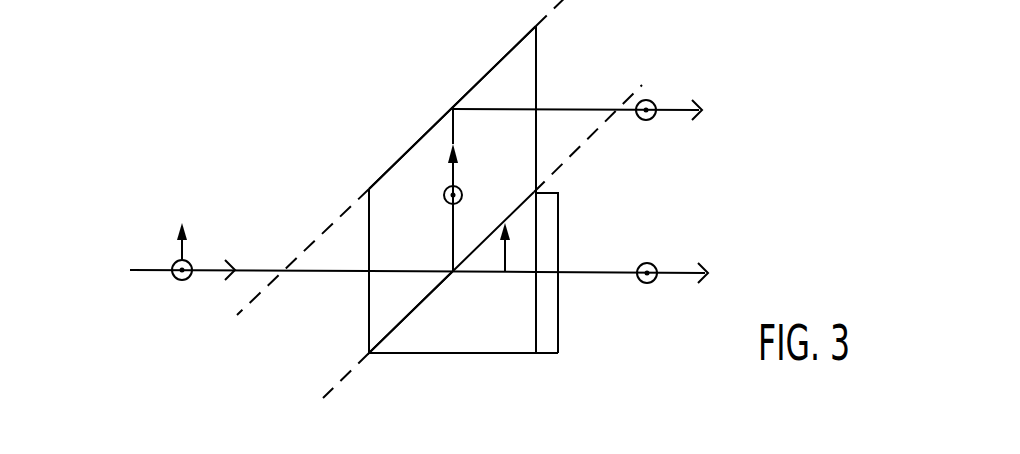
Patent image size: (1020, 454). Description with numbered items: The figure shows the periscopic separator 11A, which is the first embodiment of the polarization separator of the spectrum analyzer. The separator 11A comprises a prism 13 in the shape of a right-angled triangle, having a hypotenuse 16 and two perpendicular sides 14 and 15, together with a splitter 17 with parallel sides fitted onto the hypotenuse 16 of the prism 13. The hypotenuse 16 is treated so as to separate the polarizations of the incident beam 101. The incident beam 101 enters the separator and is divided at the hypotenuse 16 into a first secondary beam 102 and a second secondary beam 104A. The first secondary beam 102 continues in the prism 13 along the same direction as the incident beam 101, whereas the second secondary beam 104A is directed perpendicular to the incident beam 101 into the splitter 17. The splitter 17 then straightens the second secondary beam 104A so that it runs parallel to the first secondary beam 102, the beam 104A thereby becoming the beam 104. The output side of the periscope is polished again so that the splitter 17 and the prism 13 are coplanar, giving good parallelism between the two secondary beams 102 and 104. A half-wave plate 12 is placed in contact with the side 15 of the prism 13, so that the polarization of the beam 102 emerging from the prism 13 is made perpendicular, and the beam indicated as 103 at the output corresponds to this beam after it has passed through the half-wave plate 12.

The periscopic separator 11A is at (383, 121).
The λ/2 plate 12 is at (560, 207).
The prism 13 is at (452, 364).
The perpendicular side 14 is at (505, 357).
The perpendicular side 15 is at (536, 325).
The hypotenuse 16 is at (513, 208).
The splitter 17 is at (498, 87).
The incident beam 101 is at (255, 270).
The first secondary beam 102 is at (490, 273).
The output light beam 103 is at (589, 273).
The second secondary beam (straightened) 104 is at (588, 109).
The second secondary beam 104A is at (452, 240).